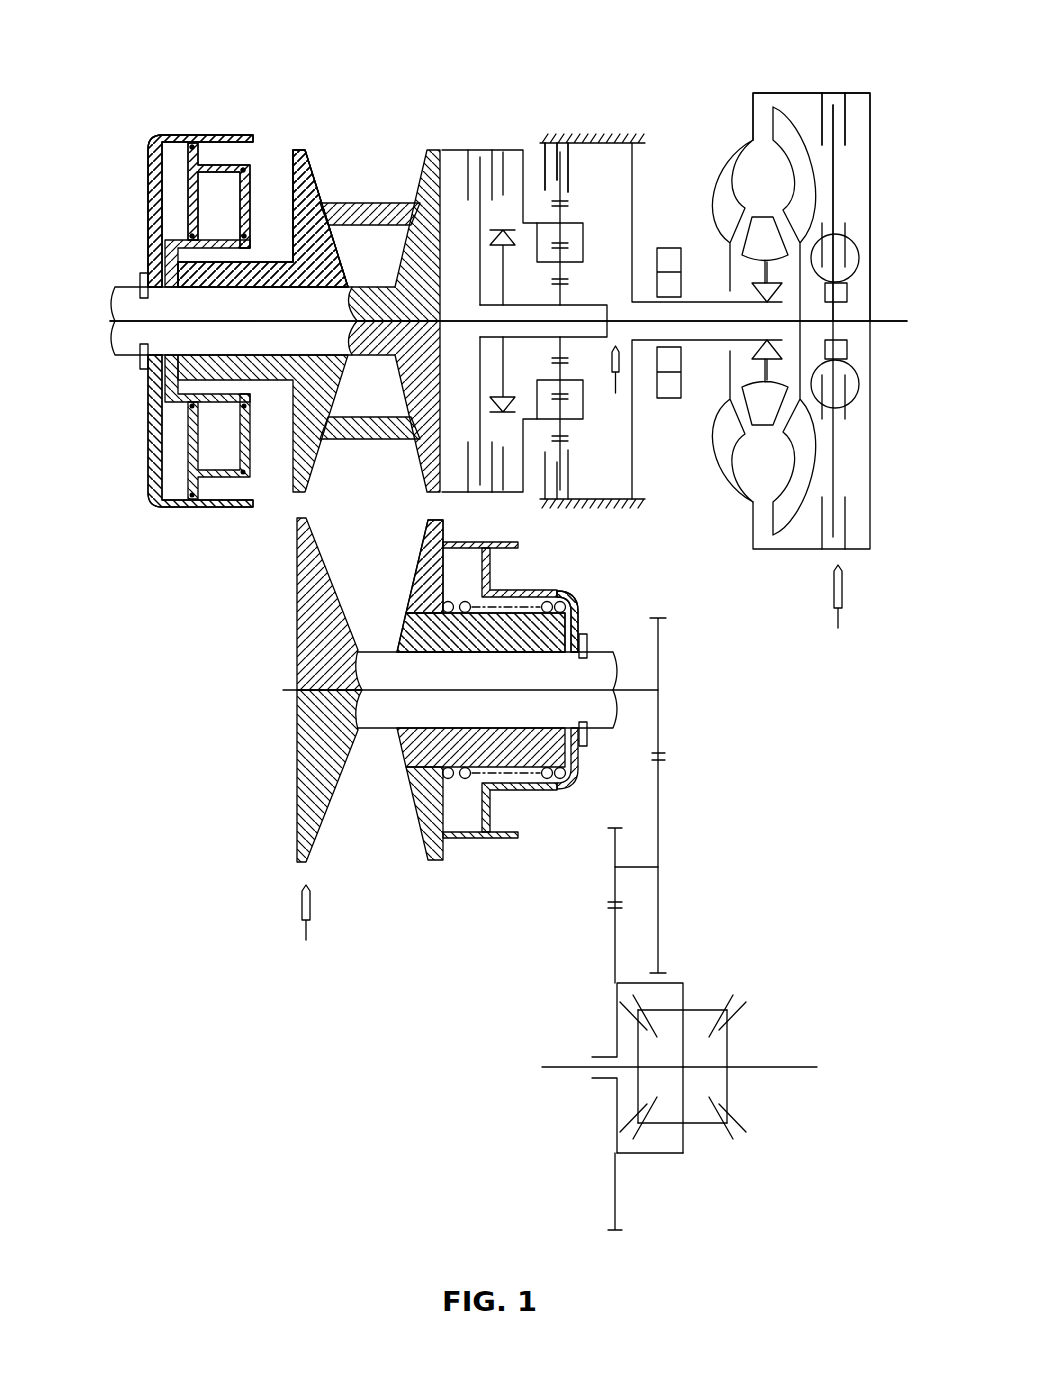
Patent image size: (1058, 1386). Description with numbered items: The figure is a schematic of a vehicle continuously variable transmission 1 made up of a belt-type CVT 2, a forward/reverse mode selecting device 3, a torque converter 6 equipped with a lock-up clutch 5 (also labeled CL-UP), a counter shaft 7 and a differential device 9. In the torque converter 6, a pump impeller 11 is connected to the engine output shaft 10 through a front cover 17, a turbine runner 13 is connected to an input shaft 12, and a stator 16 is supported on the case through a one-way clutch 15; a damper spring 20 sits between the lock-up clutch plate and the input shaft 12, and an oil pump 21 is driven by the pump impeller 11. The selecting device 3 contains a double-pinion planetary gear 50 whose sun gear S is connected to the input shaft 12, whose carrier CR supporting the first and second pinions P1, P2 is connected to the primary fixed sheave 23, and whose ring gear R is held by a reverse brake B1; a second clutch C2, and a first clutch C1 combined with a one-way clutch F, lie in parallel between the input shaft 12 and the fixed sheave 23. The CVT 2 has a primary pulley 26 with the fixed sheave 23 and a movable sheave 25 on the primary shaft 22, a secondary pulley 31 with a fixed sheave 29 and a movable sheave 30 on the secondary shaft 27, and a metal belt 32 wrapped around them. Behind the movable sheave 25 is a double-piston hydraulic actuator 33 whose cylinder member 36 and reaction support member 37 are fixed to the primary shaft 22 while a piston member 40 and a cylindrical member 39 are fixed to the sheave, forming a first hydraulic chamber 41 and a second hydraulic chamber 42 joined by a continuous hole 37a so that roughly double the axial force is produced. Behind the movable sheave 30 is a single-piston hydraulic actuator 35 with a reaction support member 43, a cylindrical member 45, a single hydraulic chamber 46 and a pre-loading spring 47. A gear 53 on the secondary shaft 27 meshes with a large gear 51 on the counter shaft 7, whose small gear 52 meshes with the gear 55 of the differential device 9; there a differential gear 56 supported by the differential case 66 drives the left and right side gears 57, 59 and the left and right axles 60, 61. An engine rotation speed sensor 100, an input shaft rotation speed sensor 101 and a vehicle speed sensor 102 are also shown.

The continuously variable transmission 1 is at (123, 48).
The belt-type continuously variable transmission 2 is at (243, 559).
The forward/reverse mode selecting device 3 is at (457, 60).
The lock-up clutch 5 is at (838, 118).
The torque converter 6 is at (757, 66).
The counter shaft 7 is at (652, 865).
The differential device 9 is at (743, 961).
The engine output shaft 10 is at (893, 321).
The pump impeller 11 is at (722, 145).
The input shaft 12 is at (713, 326).
The turbine runner 13 is at (818, 162).
The one-way clutch 15 is at (752, 291).
The stator 16 is at (767, 215).
The front cover 17 is at (772, 92).
The damper spring 20 is at (859, 372).
The oil pump 21 is at (667, 248).
The primary shaft 22 is at (113, 291).
The fixed sheave 23 is at (428, 150).
The movable sheave 25 is at (303, 152).
The primary pulley 26 is at (292, 110).
The secondary shaft 27 is at (597, 650).
The fixed sheave 29 is at (296, 853).
The movable sheave 30 is at (438, 862).
The secondary pulley 31 is at (373, 882).
The metal belt 32 is at (376, 203).
The hydraulic actuator 33 is at (136, 132).
The hydraulic actuator 35 is at (628, 600).
The cylinder member 36 is at (162, 134).
The reaction support member 37 is at (226, 166).
The continuous hole 37a is at (172, 209).
The cylindrical member 39 is at (290, 155).
The piston member 40 is at (190, 143).
The first hydraulic chamber 41 is at (312, 185).
The second hydraulic chamber 42 is at (168, 183).
The reaction support member 43 is at (563, 590).
The cylindrical member 45 is at (470, 540).
The hydraulic chamber 46 is at (490, 573).
The pre-loading spring 47 is at (588, 598).
The double-pinion planetary gear 50 is at (580, 164).
The large gear 51 is at (667, 776).
The small gear 52 is at (609, 838).
The gear 53 is at (666, 626).
The gear 55 is at (609, 942).
The differential gear 56 is at (698, 1001).
The left side gear 57 is at (637, 1040).
The right side gear 59 is at (728, 1042).
The left axle 60 is at (555, 1068).
The right axle 61 is at (797, 1068).
The differential case 66 is at (661, 1154).
The engine rotation speed sensor 100 is at (832, 588).
The input shaft rotation speed sensor 101 is at (622, 376).
The vehicle speed sensor 102 is at (301, 915).
The first clutch C1 is at (503, 150).
The second clutch C2 is at (466, 152).
The reverse brake B1 is at (548, 143).
The ring gear R is at (572, 178).
The first pinion P1 is at (569, 246).
The second pinion P2 is at (569, 205).
The sun gear S is at (569, 283).
The one-way clutch F is at (503, 246).
The carrier CR is at (570, 421).
The lock-up clutch CL-UP is at (836, 194).